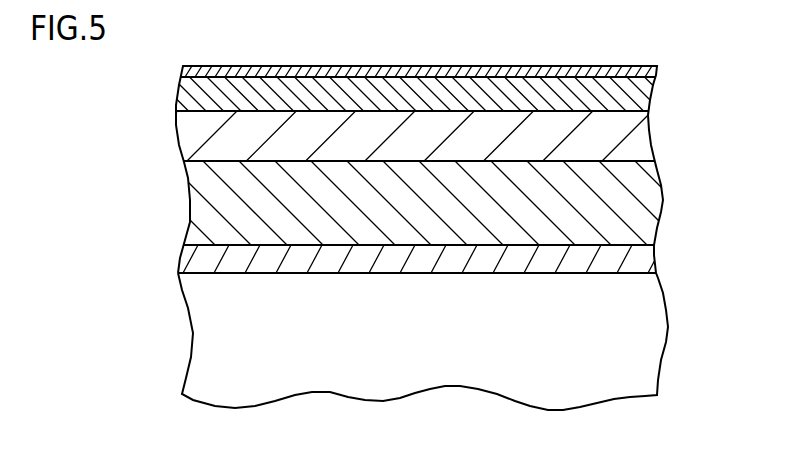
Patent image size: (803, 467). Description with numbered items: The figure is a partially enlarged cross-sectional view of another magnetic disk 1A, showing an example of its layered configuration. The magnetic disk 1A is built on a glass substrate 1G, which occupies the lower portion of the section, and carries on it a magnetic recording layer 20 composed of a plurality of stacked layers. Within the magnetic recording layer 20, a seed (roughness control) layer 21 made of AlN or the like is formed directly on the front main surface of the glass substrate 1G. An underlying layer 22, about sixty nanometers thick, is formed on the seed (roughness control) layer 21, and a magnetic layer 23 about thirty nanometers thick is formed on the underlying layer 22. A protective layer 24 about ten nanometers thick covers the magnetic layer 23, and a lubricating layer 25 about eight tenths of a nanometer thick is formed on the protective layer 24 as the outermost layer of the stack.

The magnetic disk 1A is at (105, 64).
The glass substrate 1G is at (163, 277).
The magnetic recording layer 20 is at (163, 63).
The seed (roughness control) layer 21 is at (627, 258).
The underlying layer 22 is at (627, 203).
The magnetic layer 23 is at (625, 136).
The protective layer 24 is at (627, 95).
The lubricating layer 25 is at (633, 71).